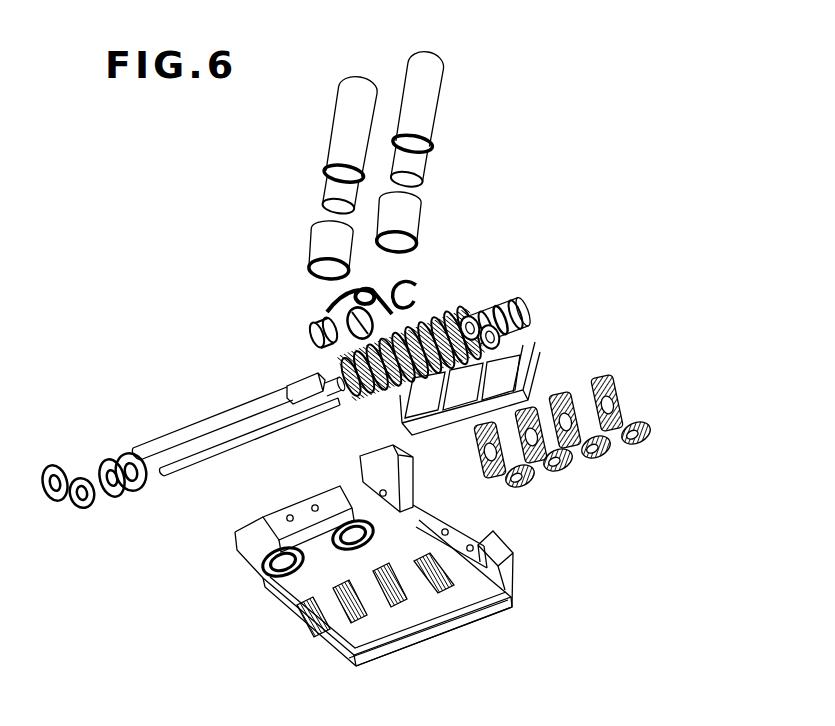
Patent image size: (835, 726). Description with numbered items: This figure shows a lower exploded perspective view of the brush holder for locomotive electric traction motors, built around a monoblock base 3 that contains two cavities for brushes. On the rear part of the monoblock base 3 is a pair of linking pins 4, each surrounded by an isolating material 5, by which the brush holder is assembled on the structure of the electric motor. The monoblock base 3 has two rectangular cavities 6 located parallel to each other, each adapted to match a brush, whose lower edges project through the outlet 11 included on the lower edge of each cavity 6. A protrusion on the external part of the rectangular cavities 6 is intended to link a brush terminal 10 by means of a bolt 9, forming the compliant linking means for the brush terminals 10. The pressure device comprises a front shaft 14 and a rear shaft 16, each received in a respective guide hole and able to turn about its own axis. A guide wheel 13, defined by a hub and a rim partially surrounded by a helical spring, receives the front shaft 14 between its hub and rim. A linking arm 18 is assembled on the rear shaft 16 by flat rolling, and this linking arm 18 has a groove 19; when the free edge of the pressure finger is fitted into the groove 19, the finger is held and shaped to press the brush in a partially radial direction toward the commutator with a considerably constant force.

The monoblock base 3 is at (288, 590).
The linking pin 4 is at (439, 103).
The isolating material 5 is at (322, 247).
The rectangular cavity 6 is at (387, 632).
The bolt 9 is at (650, 430).
The brush terminal 10 is at (618, 405).
The outlet 11 is at (463, 610).
The guide wheel 13 is at (462, 298).
The front shaft 14 is at (187, 462).
The rear shaft 16 is at (178, 435).
The linking arm 18 is at (313, 331).
The groove 19 is at (312, 326).